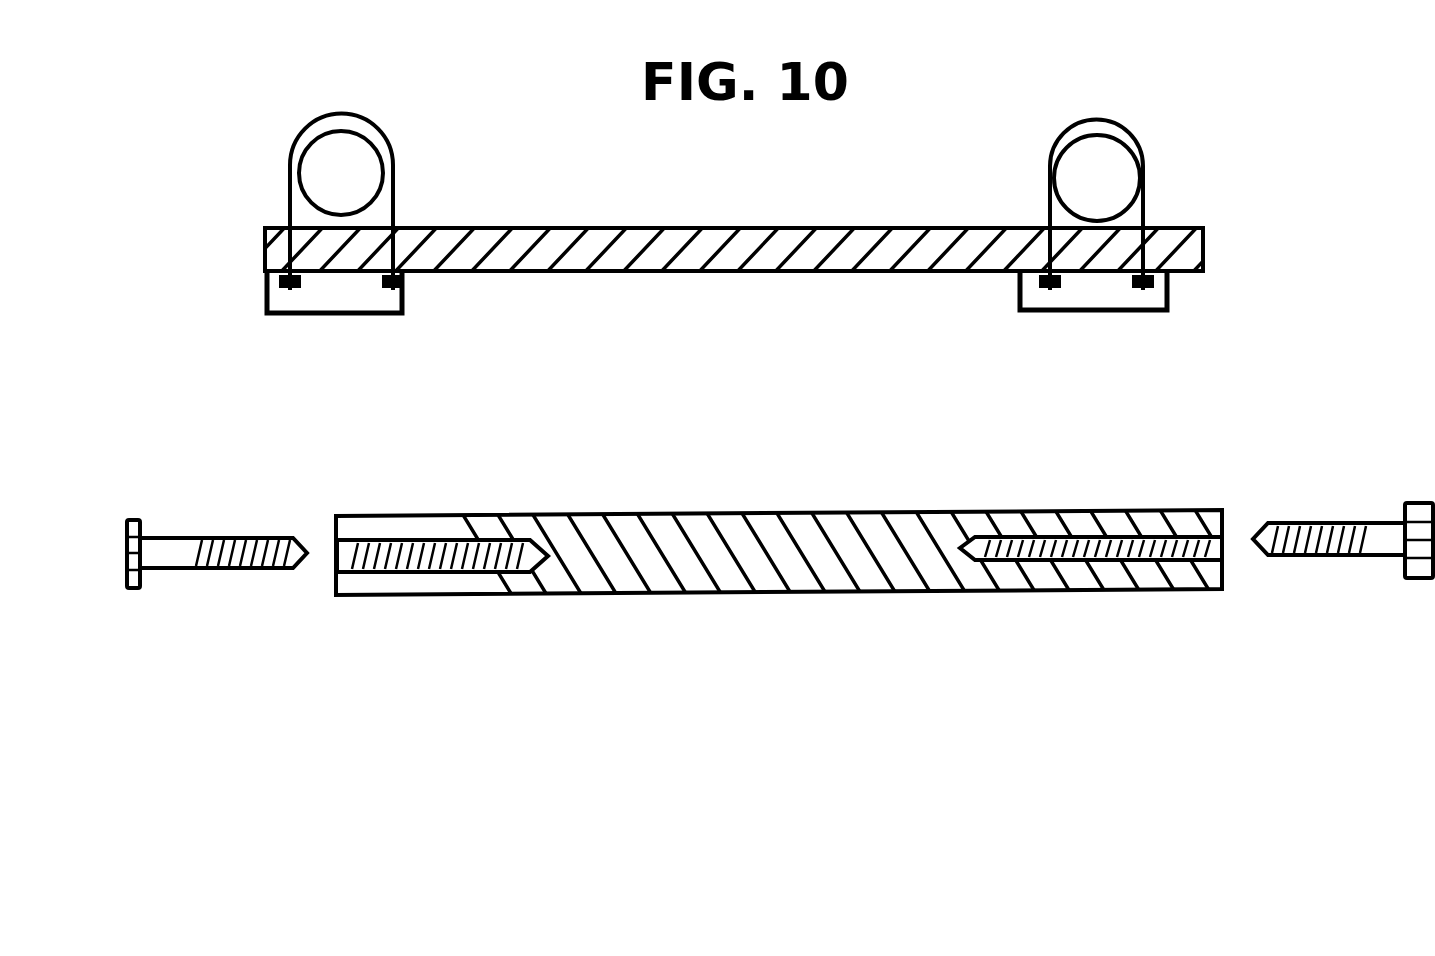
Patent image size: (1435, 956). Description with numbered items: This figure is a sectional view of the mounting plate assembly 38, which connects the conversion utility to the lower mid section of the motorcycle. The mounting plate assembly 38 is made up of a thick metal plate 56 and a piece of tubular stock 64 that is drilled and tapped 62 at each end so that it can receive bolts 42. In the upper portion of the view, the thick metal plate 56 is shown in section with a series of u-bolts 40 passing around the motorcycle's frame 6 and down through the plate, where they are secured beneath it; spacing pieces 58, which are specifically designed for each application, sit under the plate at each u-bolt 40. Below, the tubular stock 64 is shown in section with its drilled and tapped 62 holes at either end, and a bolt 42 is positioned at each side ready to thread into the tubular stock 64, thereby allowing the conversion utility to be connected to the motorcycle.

The motorcycle frame 6 is at (343, 167).
The mounting plate assembly 38 is at (549, 220).
The u-bolts 40 is at (308, 122).
The bolts 42 is at (217, 538).
The thick metal plate 56 is at (1203, 250).
The spacing pieces 58 is at (333, 285).
The drilled and tapped 62 is at (438, 573).
The tubular stock 64 is at (732, 590).